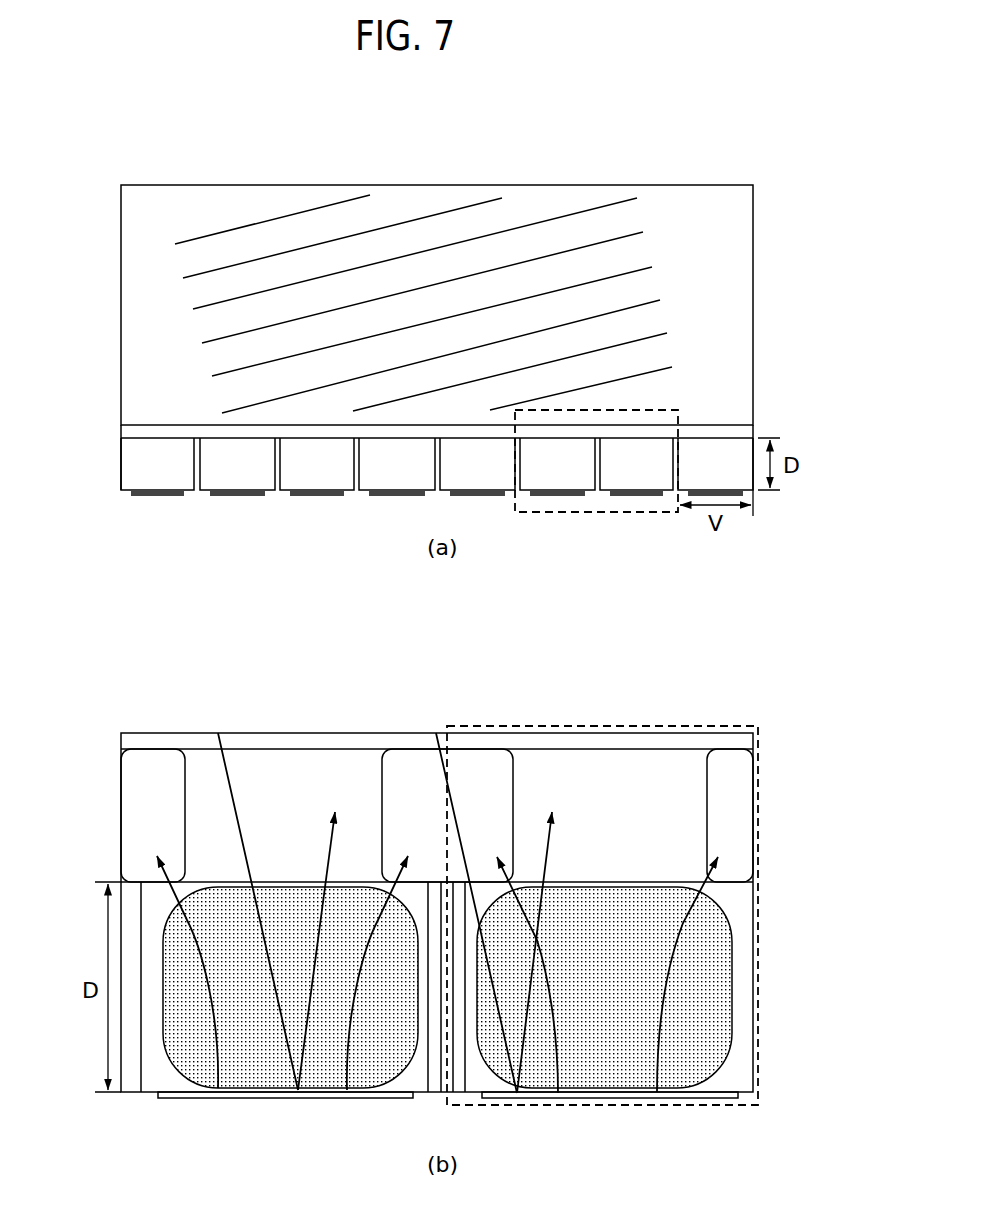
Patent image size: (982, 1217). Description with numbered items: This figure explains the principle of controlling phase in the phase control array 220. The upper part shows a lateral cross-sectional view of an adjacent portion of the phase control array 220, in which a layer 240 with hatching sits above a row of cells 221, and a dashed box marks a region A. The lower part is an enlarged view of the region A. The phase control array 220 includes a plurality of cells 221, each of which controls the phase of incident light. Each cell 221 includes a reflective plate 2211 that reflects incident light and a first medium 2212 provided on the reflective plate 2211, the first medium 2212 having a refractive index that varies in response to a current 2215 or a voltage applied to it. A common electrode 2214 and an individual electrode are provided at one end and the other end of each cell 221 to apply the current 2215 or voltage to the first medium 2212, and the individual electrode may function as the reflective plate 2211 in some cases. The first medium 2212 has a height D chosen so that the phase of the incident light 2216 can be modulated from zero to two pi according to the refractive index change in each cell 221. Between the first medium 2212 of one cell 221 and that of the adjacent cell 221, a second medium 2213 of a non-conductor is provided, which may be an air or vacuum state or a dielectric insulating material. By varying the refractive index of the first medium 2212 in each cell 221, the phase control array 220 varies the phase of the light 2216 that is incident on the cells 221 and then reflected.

The optical layer 240 is at (140, 273).
The phase control array 220 is at (140, 461).
The region A is at (680, 413).
The cell 221 is at (758, 1007).
The reflective plate 2211 is at (713, 1097).
The first medium 2212 is at (708, 958).
The second medium 2213 is at (435, 1045).
The common electrode 2214 is at (490, 775).
The current 2215 is at (687, 923).
The light 2216 is at (237, 818).